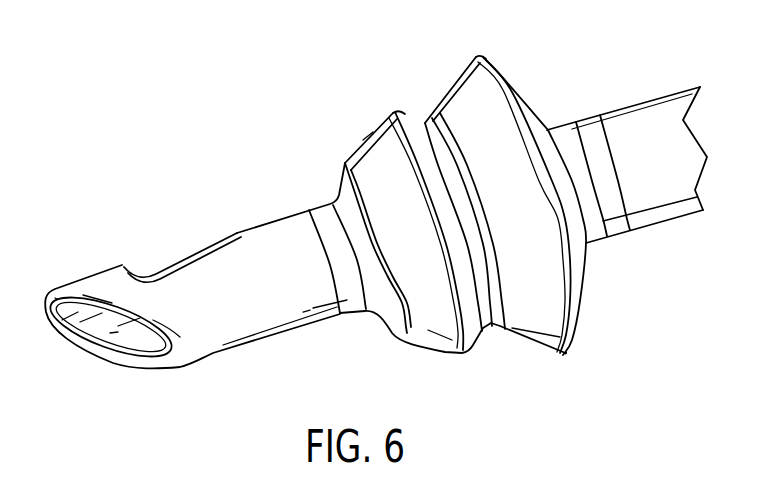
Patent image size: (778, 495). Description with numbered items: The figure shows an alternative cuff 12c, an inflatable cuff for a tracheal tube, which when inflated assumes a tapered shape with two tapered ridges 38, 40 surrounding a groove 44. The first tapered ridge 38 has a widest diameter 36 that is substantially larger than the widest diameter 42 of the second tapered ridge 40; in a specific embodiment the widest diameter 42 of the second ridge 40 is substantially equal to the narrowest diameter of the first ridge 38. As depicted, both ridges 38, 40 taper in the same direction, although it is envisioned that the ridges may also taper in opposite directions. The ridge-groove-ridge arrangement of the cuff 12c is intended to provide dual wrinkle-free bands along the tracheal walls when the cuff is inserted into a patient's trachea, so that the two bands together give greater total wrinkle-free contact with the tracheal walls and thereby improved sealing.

The cuff 12c is at (282, 41).
The widest diameter 36 is at (476, 56).
The tapered ridge 38 is at (563, 356).
The tapered ridge 40 is at (375, 140).
The widest diameter 42 is at (394, 112).
The groove 44 is at (486, 308).